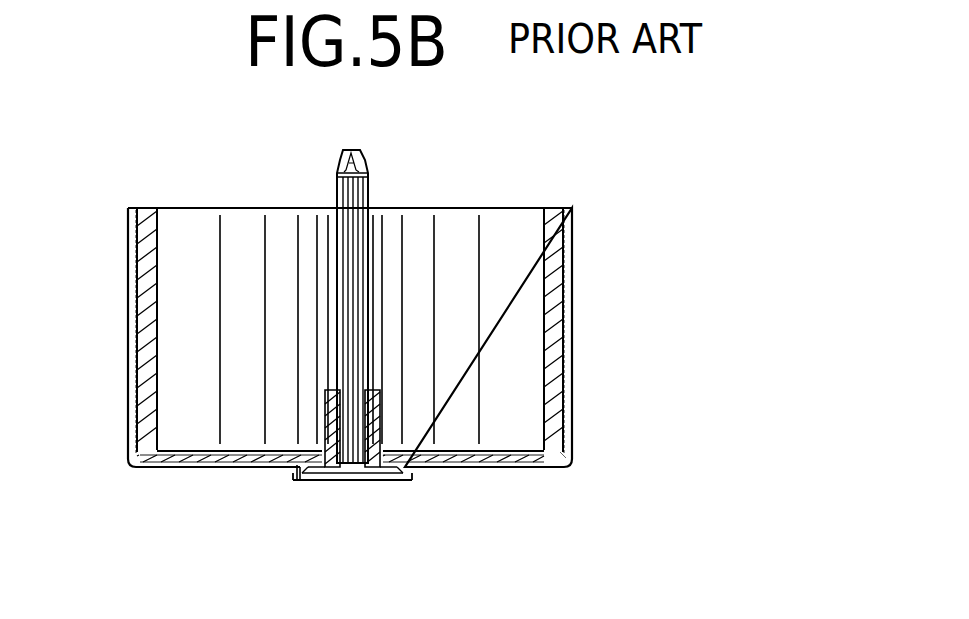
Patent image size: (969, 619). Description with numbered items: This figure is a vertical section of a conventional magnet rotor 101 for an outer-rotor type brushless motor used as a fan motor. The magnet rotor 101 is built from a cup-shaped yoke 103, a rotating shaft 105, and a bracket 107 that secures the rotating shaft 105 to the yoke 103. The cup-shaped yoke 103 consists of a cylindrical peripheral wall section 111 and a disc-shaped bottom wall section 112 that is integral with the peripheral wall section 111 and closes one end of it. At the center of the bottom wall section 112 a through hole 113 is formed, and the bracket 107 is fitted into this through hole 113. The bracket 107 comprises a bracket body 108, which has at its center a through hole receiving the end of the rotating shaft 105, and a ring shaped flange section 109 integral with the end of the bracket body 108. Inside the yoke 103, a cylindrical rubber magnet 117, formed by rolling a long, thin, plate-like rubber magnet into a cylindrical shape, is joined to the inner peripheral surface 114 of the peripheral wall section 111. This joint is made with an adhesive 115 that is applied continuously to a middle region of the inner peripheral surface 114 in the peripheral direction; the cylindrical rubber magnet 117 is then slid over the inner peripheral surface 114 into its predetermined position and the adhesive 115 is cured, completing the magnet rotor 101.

The magnet rotor 101 is at (577, 207).
The cup-shaped yoke 103 is at (510, 468).
The rotating shaft 105 is at (368, 237).
The bracket 107 is at (302, 478).
The bracket body 108 is at (337, 483).
The ring shaped flange section 109 is at (312, 484).
The cylindrical peripheral wall section 111 is at (571, 254).
The disc-shaped bottom wall section 112 is at (458, 468).
The through hole 113 is at (378, 481).
The inner peripheral surface 114 is at (137, 383).
The adhesive 115 is at (563, 454).
The cylindrical rubber magnet 117 is at (552, 291).